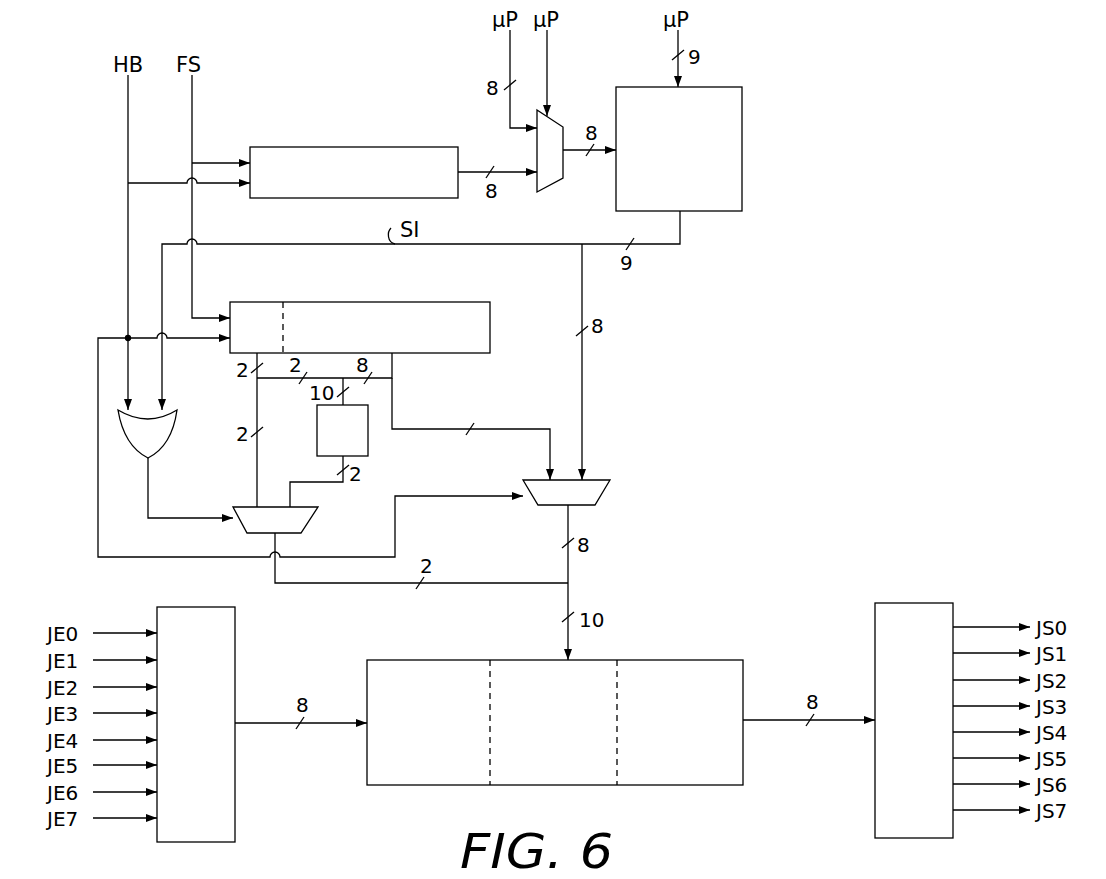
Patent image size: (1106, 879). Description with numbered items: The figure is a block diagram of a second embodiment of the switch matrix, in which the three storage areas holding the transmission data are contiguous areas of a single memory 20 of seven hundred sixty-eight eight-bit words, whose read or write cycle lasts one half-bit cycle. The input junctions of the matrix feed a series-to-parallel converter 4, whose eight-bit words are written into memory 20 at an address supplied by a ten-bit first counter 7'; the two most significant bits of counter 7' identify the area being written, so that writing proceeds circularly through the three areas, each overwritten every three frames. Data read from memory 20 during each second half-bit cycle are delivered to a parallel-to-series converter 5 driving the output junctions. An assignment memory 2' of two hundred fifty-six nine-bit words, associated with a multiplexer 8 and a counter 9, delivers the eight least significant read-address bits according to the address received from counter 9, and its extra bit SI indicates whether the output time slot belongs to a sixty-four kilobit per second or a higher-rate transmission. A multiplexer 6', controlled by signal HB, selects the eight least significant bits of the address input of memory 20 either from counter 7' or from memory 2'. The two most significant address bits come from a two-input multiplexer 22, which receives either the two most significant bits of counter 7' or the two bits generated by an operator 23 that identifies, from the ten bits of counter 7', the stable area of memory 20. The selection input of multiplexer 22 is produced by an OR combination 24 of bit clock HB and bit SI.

The counter 9 is at (365, 147).
The assignment memory 2' is at (709, 149).
The multiplexer 8 is at (548, 192).
The first counter 7' is at (360, 307).
The OR combination 24 is at (165, 444).
The operator 23 is at (368, 436).
The two-input multiplexer 22 is at (310, 526).
The multiplexer 6' is at (591, 492).
The series-to-parallel converter 4 is at (235, 808).
The memory 20 is at (722, 785).
The parallel-to-series converter 5 is at (875, 800).